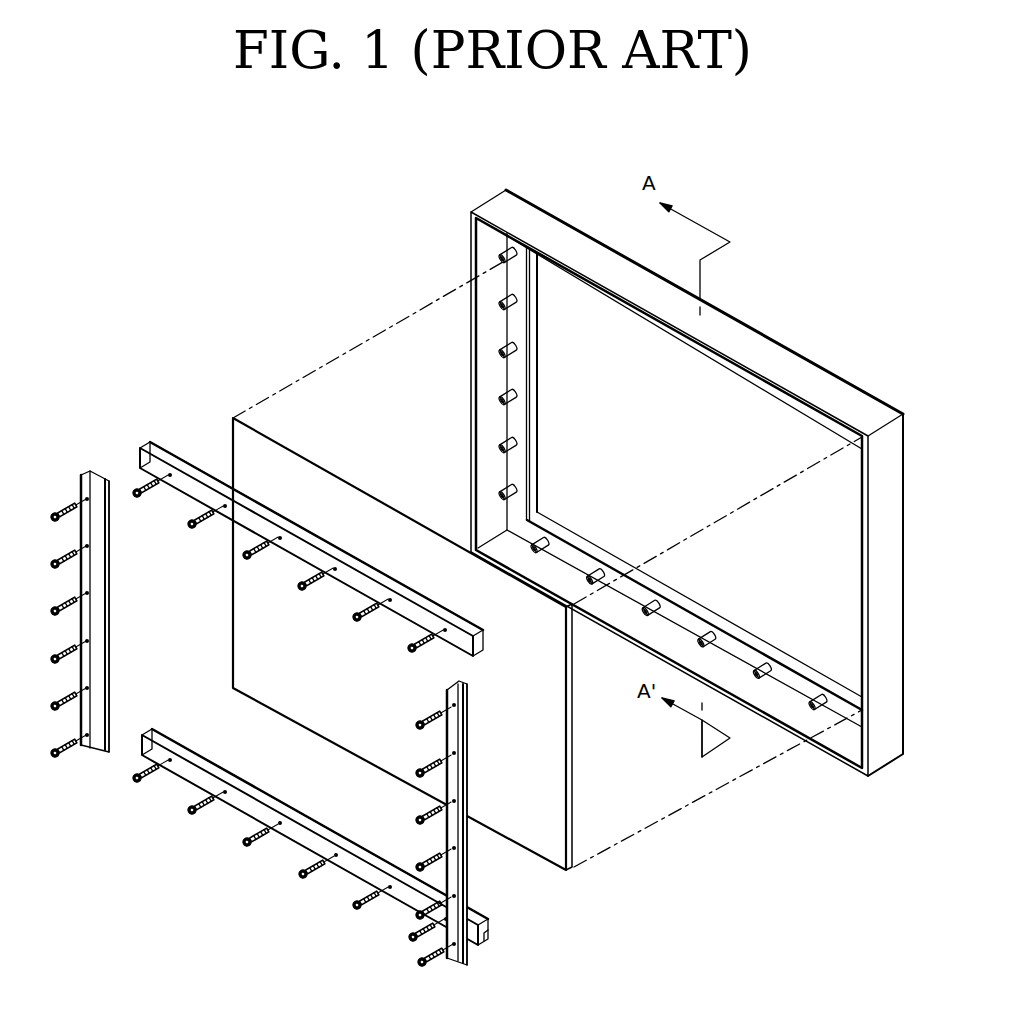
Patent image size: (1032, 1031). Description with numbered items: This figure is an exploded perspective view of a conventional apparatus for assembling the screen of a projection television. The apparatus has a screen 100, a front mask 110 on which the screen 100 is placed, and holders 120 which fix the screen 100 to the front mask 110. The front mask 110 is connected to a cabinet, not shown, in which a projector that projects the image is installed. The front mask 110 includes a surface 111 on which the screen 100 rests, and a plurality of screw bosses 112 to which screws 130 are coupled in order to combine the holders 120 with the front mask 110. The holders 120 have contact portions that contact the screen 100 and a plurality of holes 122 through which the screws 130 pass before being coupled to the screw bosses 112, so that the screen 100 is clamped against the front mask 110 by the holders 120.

The screen 100 is at (232, 645).
The front mask 110 is at (820, 363).
The surface 111 is at (530, 352).
The screw bosses 112 is at (545, 542).
The holders 120 is at (237, 811).
The holes 122 is at (278, 830).
The screws 130 is at (357, 908).